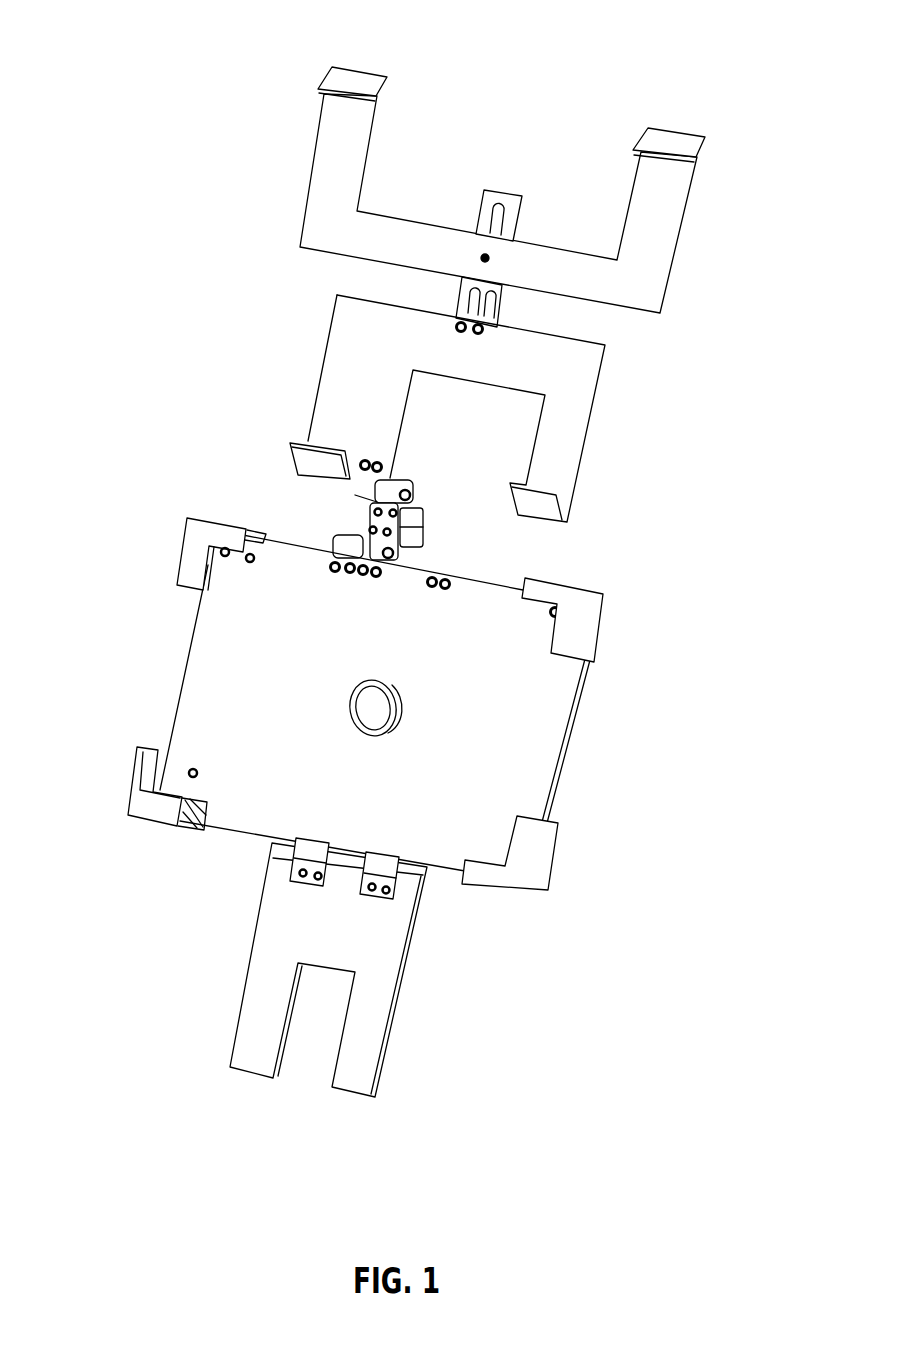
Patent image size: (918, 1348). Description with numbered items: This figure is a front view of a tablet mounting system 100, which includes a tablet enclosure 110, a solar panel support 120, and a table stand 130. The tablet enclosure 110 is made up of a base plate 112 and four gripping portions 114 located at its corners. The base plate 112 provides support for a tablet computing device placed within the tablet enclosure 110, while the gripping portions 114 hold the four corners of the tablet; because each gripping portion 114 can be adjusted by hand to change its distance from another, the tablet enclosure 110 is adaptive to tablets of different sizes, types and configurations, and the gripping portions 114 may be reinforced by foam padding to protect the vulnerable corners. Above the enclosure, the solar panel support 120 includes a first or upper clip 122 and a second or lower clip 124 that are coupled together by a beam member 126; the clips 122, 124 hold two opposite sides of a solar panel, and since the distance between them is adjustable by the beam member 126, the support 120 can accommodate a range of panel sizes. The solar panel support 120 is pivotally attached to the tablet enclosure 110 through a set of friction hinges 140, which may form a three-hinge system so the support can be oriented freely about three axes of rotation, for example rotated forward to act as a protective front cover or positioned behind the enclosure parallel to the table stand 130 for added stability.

The tablet mounting system 100 is at (757, 35).
The tablet enclosure 110 is at (180, 680).
The base plate 112 is at (424, 707).
The gripping portions 114 is at (190, 520).
The solar panel support 120 is at (280, 165).
The first or upper clip 122 is at (682, 185).
The second or lower clip 124 is at (580, 418).
The beam member 126 is at (520, 203).
The table stand 130 is at (378, 1027).
The friction hinges 140 is at (420, 520).